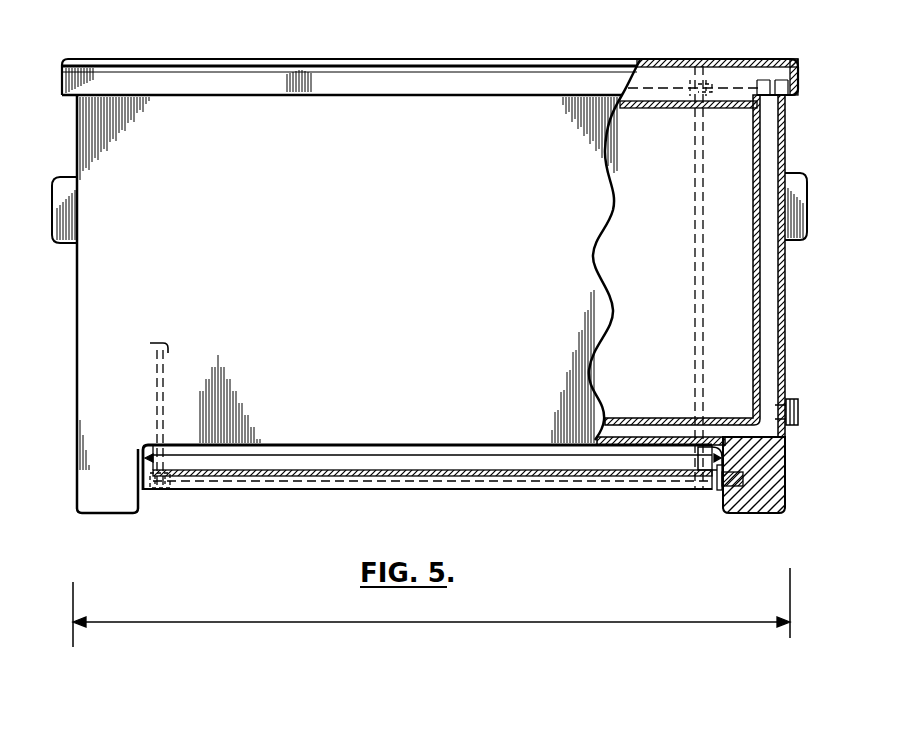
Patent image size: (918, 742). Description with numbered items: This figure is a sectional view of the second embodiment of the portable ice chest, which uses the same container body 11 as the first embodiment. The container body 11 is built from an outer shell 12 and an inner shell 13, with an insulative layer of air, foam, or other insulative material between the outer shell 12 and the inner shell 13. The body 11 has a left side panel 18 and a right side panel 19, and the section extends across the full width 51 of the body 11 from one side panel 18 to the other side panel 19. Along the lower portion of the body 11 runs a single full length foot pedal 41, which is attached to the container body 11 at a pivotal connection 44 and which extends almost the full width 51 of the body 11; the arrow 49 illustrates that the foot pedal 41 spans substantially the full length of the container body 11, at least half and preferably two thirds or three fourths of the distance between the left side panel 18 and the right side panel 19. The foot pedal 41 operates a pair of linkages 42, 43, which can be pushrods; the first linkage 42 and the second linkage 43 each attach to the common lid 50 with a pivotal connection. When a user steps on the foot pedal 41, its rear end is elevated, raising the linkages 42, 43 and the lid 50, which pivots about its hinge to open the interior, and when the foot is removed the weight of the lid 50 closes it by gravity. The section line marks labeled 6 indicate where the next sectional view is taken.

The section line 6- 6 is at (697, 545).
The container body 11 is at (787, 377).
The outer shell 12 is at (787, 128).
The inner shell 13 is at (760, 293).
The left side panel 18 is at (75, 340).
The right side panel 19 is at (785, 265).
The full length foot pedal 41 is at (317, 490).
The first linkage 42 is at (157, 362).
The second linkage 43 is at (697, 230).
The pivotal connection 44 is at (148, 490).
The arrow 49 is at (425, 450).
The lid 50 is at (414, 66).
The full width 51 is at (517, 622).